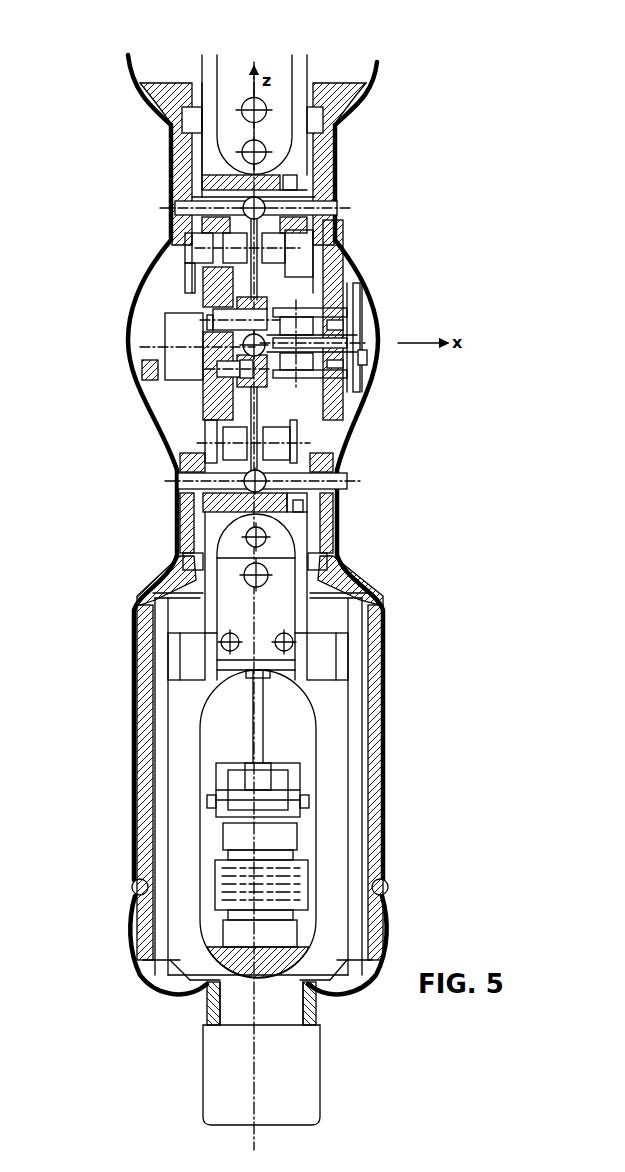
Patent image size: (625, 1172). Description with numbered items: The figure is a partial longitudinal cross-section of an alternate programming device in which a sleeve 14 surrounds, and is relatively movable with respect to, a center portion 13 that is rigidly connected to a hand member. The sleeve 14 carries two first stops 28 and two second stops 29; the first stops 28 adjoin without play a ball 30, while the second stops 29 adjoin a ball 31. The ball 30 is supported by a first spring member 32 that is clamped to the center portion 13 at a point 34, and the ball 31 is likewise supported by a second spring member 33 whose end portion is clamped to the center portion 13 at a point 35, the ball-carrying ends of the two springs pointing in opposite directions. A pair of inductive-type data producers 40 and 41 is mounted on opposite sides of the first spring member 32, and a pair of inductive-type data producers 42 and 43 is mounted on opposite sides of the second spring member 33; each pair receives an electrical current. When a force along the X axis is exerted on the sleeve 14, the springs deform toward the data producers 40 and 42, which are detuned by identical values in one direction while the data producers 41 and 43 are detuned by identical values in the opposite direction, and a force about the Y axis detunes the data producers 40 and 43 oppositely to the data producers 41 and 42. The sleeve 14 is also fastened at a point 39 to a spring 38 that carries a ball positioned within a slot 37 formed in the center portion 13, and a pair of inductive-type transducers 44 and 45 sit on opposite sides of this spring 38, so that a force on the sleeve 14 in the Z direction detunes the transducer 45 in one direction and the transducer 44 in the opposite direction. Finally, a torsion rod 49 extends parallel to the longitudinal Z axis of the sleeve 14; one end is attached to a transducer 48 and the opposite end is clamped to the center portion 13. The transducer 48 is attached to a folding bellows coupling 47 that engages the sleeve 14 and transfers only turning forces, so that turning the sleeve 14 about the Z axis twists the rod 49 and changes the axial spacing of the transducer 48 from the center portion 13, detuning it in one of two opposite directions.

The center portion 13 is at (213, 528).
The sleeve 14 is at (373, 656).
The first stops 28 is at (183, 481).
The second stops 29 is at (178, 208).
The ball 30 is at (247, 480).
The ball 31 is at (262, 203).
The first spring member 32 is at (233, 408).
The second spring member 33 is at (262, 288).
The clamping point 34 is at (244, 375).
The clamping point 35 is at (212, 320).
The slot 37 is at (207, 353).
The spring 38 is at (354, 336).
The fastening point 39 is at (352, 358).
The inductive-type data producer 40 is at (282, 447).
The inductive-type data producer 41 is at (226, 441).
The inductive-type data producer 42 is at (300, 253).
The inductive-type data producer 43 is at (215, 253).
The inductive-type transducer 44 is at (294, 374).
The inductive-type transducer 45 is at (360, 301).
The folding bellows coupling 47 is at (298, 881).
The transducer 48 is at (232, 778).
The torsion rod 49 is at (263, 725).